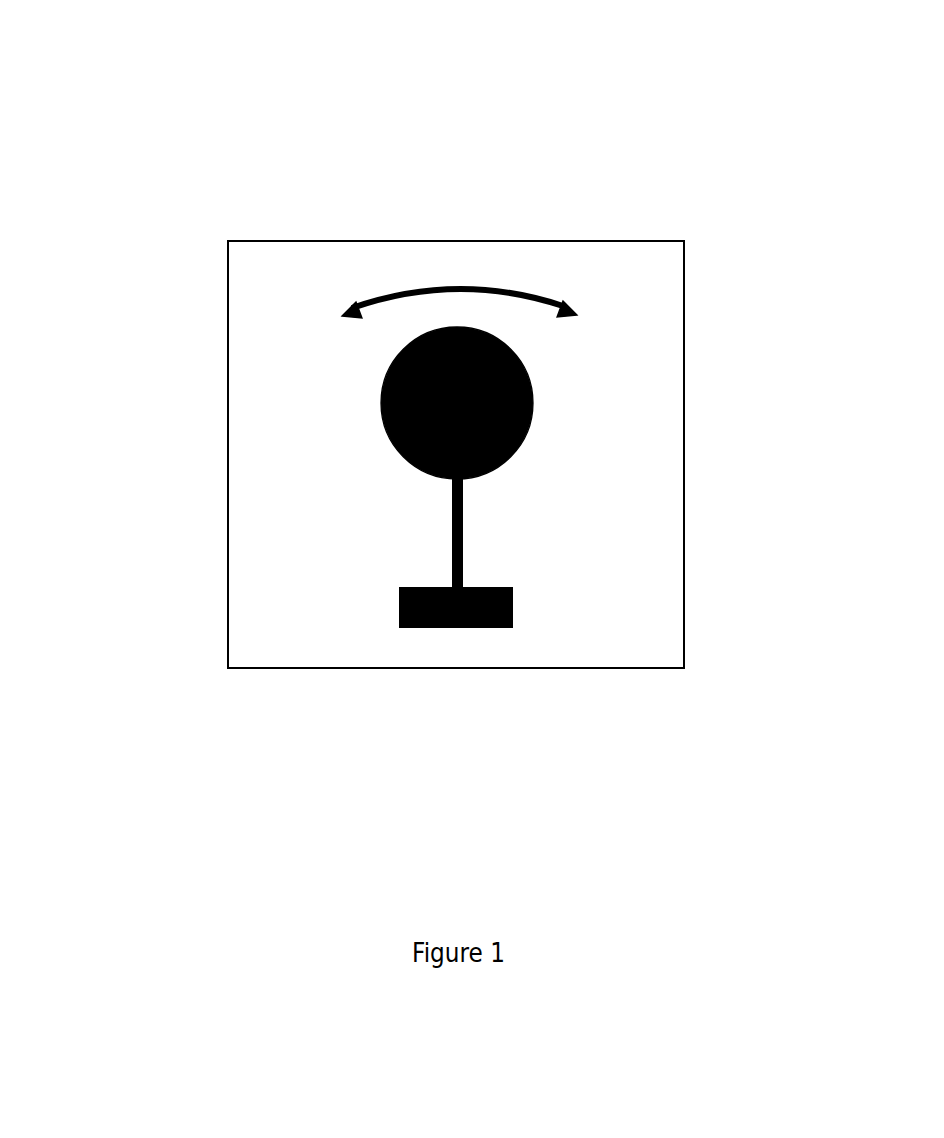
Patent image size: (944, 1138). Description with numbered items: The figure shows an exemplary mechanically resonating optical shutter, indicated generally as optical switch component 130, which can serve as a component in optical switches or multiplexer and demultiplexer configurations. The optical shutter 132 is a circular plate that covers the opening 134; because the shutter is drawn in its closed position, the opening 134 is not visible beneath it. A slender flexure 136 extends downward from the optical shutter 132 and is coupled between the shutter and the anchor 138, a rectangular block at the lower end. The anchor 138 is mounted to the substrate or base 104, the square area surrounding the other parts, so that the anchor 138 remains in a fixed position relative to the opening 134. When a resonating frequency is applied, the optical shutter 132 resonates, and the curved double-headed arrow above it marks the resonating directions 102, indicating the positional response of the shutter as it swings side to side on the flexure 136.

The mechanically resonating optical shutter 130 is at (179, 72).
The resonating directions 102 is at (504, 294).
The substrate 104 is at (313, 637).
The optical shutter 132 is at (381, 400).
The opening 134 is at (533, 409).
The flexure 136 is at (452, 523).
The anchor 138 is at (513, 607).